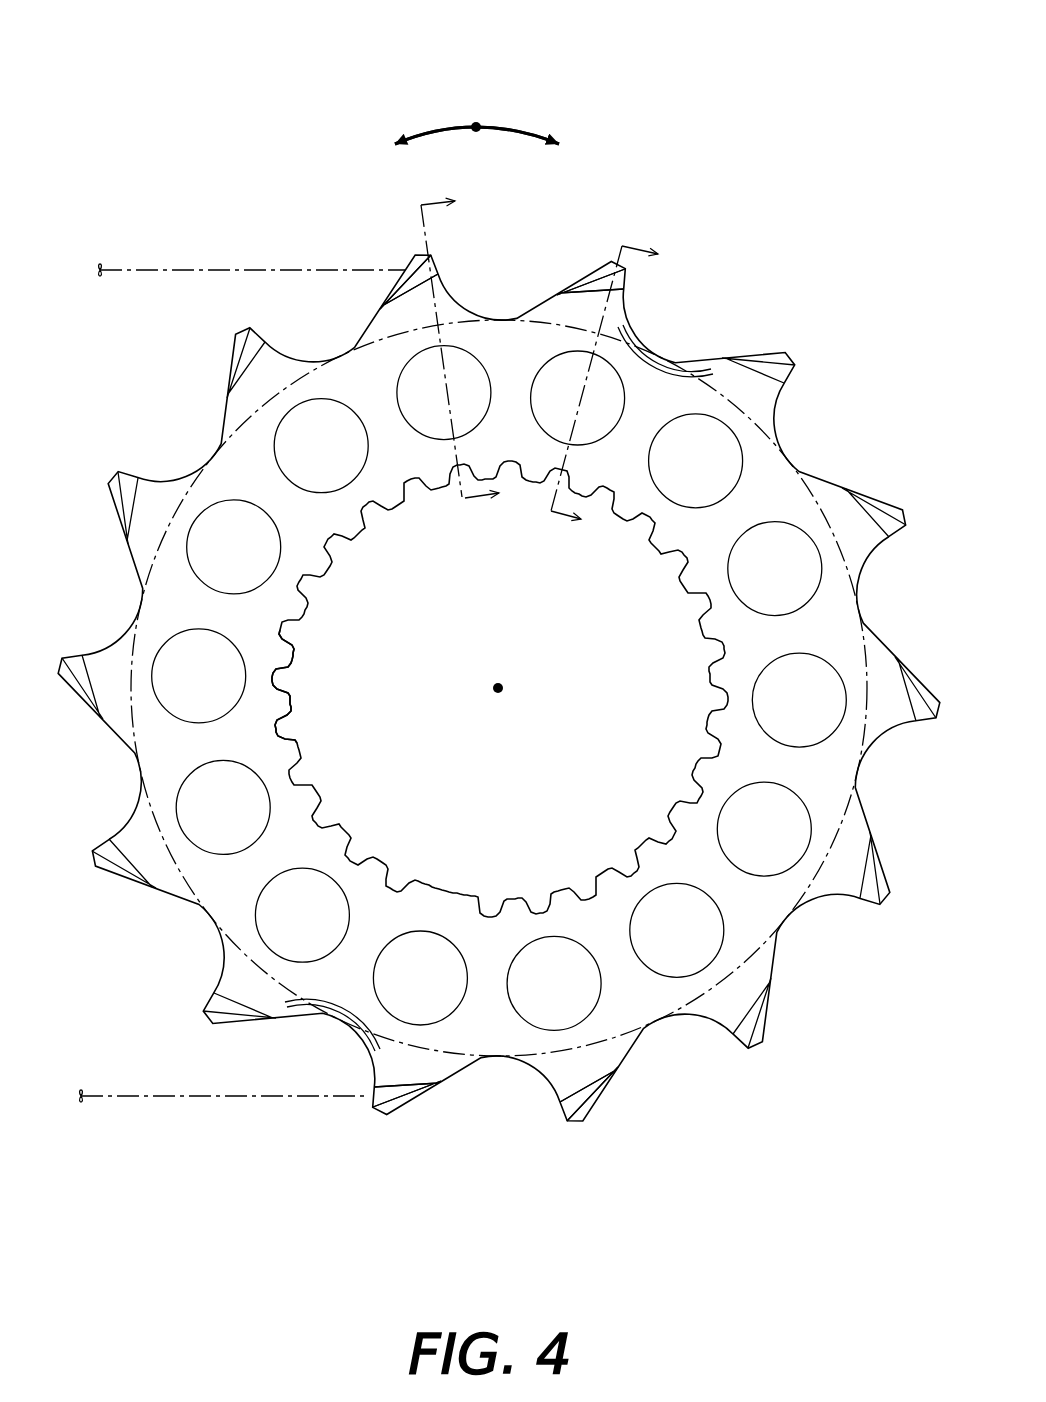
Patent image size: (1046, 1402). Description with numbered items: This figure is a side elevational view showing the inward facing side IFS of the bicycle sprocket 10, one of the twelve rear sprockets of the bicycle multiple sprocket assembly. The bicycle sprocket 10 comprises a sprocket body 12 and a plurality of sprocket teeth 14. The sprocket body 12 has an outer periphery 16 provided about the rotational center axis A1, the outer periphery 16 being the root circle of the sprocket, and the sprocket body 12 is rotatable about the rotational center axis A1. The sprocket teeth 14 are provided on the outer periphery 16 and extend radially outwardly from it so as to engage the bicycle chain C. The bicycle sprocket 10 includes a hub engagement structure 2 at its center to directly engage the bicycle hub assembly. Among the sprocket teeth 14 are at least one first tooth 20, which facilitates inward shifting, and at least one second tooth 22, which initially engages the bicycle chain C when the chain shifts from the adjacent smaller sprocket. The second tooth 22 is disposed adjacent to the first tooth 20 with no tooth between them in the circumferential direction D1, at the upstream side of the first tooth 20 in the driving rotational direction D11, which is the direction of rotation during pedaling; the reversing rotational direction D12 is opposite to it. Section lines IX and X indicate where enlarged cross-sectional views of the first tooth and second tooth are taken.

The bicycle sprocket 10 is at (446, 1278).
The sprocket body 12 is at (756, 499).
The sprocket teeth 14 is at (214, 345).
The first tooth 20 is at (402, 258).
The second tooth 22 is at (588, 258).
The outer periphery 16 is at (848, 562).
The hub engagement structure 2 is at (323, 566).
The inward facing side IFS is at (222, 613).
The rotational center axis A1 is at (499, 681).
The bicycle chain C is at (205, 269).
The circumferential direction D1 is at (561, 49).
The driving rotational direction D11 is at (434, 126).
The reversing rotational direction D12 is at (520, 128).
The section line IX is at (467, 351).
The section line X is at (607, 388).